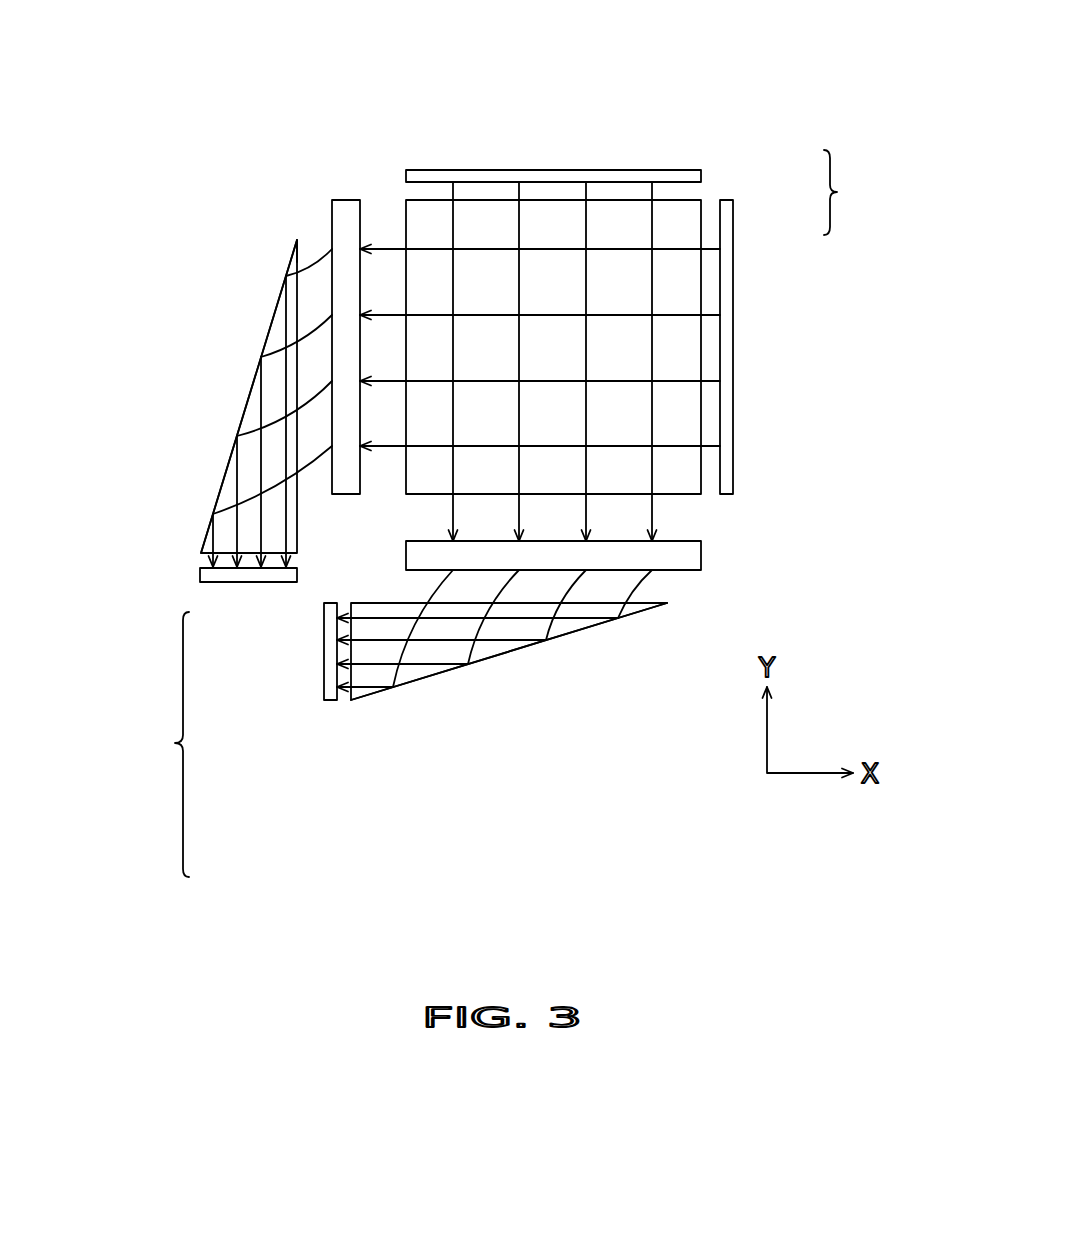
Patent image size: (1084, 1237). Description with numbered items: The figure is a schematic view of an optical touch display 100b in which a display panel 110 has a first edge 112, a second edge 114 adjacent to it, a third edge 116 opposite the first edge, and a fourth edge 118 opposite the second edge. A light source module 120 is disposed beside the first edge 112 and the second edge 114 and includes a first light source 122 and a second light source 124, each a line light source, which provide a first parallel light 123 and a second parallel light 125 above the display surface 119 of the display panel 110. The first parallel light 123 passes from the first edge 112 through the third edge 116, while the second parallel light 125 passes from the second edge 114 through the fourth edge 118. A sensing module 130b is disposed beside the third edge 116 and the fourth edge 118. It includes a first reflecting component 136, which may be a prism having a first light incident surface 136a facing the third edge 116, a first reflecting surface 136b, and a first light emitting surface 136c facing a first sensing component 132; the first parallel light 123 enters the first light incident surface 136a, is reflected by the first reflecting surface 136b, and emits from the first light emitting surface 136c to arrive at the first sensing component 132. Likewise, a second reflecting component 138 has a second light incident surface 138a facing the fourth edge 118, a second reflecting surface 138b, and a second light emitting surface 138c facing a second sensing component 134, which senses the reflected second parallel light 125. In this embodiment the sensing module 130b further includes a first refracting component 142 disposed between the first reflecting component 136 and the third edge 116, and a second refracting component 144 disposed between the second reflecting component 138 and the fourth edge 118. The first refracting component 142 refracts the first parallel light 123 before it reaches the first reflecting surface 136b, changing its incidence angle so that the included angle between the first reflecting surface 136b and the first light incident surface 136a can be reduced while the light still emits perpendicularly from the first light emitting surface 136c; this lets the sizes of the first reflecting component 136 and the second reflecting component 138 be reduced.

The optical touch display 100b is at (667, 833).
The display panel 110 is at (693, 487).
The first edge 112 is at (432, 198).
The second edge 114 is at (703, 233).
The third edge 116 is at (693, 497).
The fourth edge 118 is at (405, 210).
The display surface 119 is at (688, 468).
The light source module 120 is at (858, 192).
The first light source 122 is at (703, 172).
The first parallel light 123 is at (453, 190).
The second light source 124 is at (730, 217).
The second parallel light 125 is at (712, 250).
The sensing module 130b is at (145, 744).
The first sensing component 132 is at (332, 700).
The second sensing component 134 is at (270, 575).
The first reflecting component 136 is at (358, 703).
The first light incident surface 136a is at (650, 603).
The first reflecting surface 136b is at (515, 651).
The first light emitting surface 136c is at (353, 674).
The second reflecting component 138 is at (247, 548).
The second light incident surface 138a is at (297, 252).
The second reflecting surface 138b is at (268, 333).
The second light emitting surface 138c is at (229, 553).
The first refracting component 142 is at (417, 558).
The second refracting component 144 is at (343, 487).